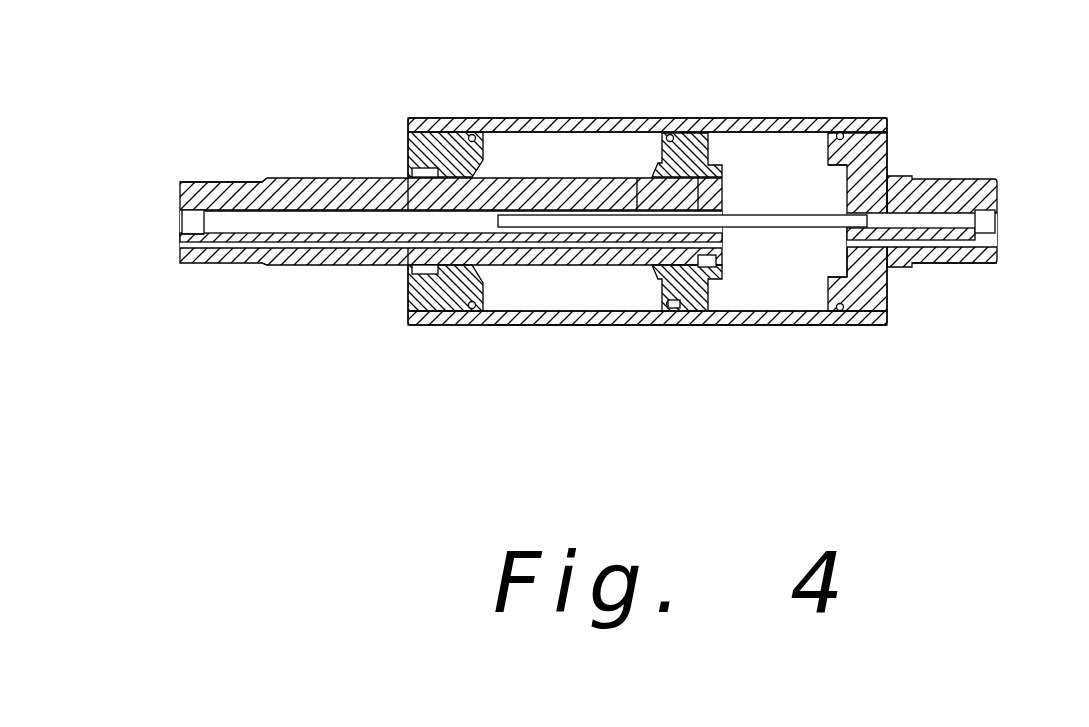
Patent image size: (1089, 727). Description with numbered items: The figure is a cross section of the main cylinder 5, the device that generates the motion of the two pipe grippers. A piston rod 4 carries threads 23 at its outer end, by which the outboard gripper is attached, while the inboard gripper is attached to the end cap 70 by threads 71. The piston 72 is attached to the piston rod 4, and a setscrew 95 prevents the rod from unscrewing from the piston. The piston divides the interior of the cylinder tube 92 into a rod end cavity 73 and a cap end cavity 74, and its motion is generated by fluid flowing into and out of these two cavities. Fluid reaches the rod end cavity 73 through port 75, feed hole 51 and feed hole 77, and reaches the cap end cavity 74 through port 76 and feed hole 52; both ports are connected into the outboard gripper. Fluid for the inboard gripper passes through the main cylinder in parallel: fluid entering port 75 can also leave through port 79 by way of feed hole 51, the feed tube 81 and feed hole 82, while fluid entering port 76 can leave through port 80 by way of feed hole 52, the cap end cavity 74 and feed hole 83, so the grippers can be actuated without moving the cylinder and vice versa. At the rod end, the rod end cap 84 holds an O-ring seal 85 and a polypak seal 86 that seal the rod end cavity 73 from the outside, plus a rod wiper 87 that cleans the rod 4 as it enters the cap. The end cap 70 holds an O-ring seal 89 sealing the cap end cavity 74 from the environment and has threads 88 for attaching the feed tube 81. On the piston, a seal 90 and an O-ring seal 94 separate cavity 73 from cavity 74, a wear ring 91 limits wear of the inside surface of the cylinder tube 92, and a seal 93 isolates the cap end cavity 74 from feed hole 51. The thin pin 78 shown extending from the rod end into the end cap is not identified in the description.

The piston rod 4 is at (288, 178).
The main cylinder 5 is at (567, 72).
The threads 23 is at (205, 180).
The feed hole 51 is at (297, 233).
The feed hole 52 is at (368, 250).
The end cap 70 is at (888, 150).
The threads 71 is at (975, 178).
The piston 72 is at (712, 140).
The rod end cavity 73 is at (530, 154).
The cap end cavity 74 is at (756, 163).
The port 75 is at (180, 217).
The port 76 is at (182, 238).
The feed hole 77 is at (637, 208).
The pin 78 is at (723, 243).
The port 79 is at (998, 217).
The port 80 is at (998, 242).
The feed tube 81 is at (848, 252).
The feed hole 82 is at (923, 210).
The feed hole 83 is at (953, 267).
The rod end cap 84 is at (430, 172).
The O-ring seal 85 is at (470, 128).
The polypak seal 86 is at (430, 120).
The rod wiper 87 is at (407, 303).
The threads 88 is at (872, 140).
The O-ring seal 89 is at (843, 132).
The seal 90 is at (675, 310).
The wear ring 91 is at (692, 310).
The cylinder tube 92 is at (552, 325).
The seal 93 is at (662, 132).
The O-ring seal 94 is at (650, 272).
The setscrew 95 is at (712, 265).